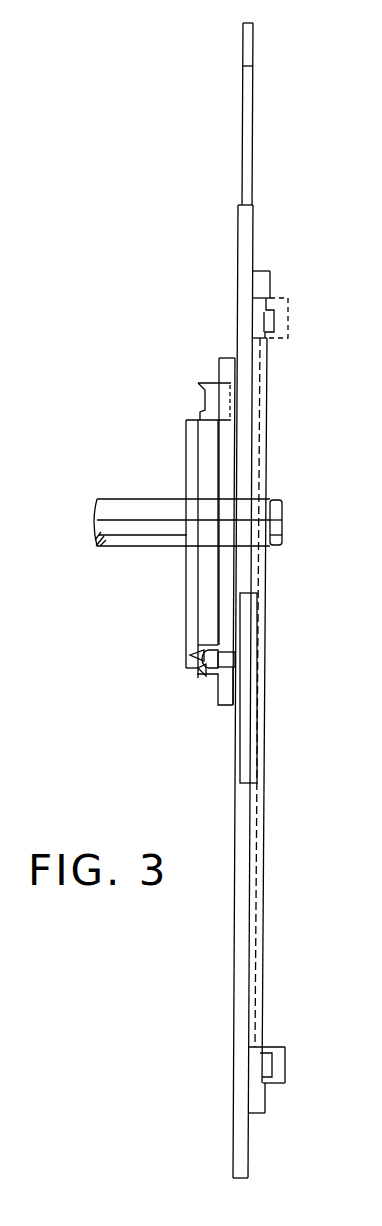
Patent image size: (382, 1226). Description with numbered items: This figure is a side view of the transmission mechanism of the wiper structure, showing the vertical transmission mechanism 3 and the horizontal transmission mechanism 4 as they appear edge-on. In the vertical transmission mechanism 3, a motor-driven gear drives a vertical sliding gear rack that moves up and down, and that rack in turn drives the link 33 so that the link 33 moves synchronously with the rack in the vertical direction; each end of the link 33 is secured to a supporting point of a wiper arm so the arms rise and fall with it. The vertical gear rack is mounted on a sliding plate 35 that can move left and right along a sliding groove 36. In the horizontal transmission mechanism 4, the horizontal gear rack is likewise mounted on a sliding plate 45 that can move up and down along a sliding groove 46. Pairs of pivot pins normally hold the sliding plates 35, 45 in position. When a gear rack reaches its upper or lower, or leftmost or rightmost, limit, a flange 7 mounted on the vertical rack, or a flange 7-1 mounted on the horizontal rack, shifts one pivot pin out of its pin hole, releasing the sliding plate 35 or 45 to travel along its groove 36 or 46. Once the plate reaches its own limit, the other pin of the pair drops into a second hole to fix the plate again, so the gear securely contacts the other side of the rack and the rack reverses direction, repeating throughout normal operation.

The vertical transmission mechanism 3 is at (241, 905).
The link 33 is at (250, 45).
The sliding plate 35 is at (268, 306).
The sliding groove 36 is at (292, 318).
The sliding groove 46 is at (226, 370).
The horizontal transmission mechanism 4 is at (187, 607).
The flange 7 is at (200, 665).
The sliding plate 45 is at (204, 675).
The flange 7-1 is at (242, 741).